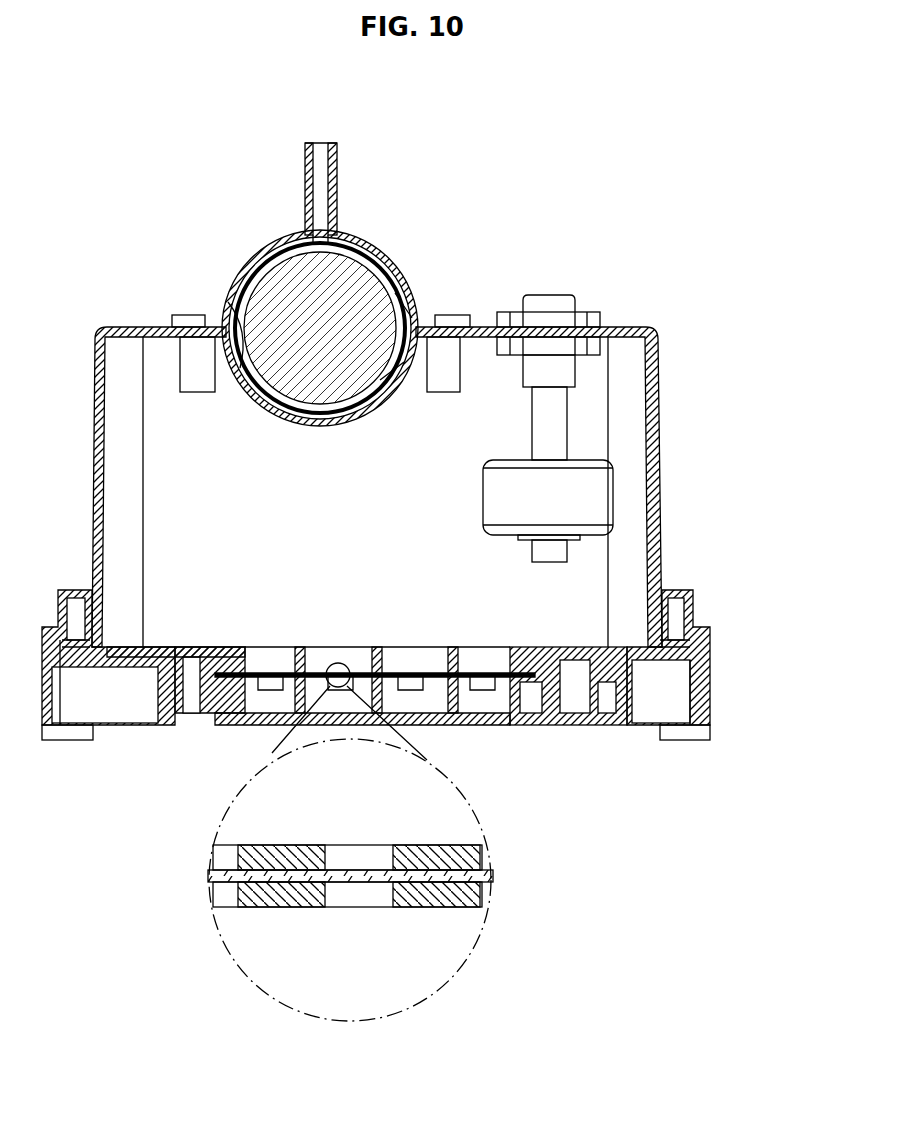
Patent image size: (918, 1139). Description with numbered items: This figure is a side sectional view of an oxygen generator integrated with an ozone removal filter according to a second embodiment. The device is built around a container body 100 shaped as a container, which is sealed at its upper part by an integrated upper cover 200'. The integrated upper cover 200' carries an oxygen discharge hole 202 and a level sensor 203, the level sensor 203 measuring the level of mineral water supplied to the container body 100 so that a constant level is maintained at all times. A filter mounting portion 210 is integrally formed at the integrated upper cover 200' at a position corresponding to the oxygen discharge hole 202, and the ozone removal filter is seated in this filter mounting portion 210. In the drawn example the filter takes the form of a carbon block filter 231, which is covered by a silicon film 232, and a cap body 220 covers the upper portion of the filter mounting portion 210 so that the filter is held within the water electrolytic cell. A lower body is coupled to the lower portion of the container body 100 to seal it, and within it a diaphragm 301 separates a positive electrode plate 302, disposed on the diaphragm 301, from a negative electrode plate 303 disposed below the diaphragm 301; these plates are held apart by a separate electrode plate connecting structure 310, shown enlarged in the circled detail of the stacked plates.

The container body 100 is at (657, 475).
The integrated upper cover 200' is at (448, 447).
The oxygen discharge hole 202 is at (337, 152).
The level sensor 203 is at (552, 417).
The filter mounting portion 210 is at (228, 302).
The cap body 220 is at (265, 240).
The carbon block filter 231 is at (350, 283).
The silicon film 232 is at (403, 273).
The diaphragm 301 is at (493, 876).
The positive electrode plate 302 is at (483, 850).
The negative electrode plate 303 is at (482, 895).
The electrode plate connecting structure 310 is at (500, 725).